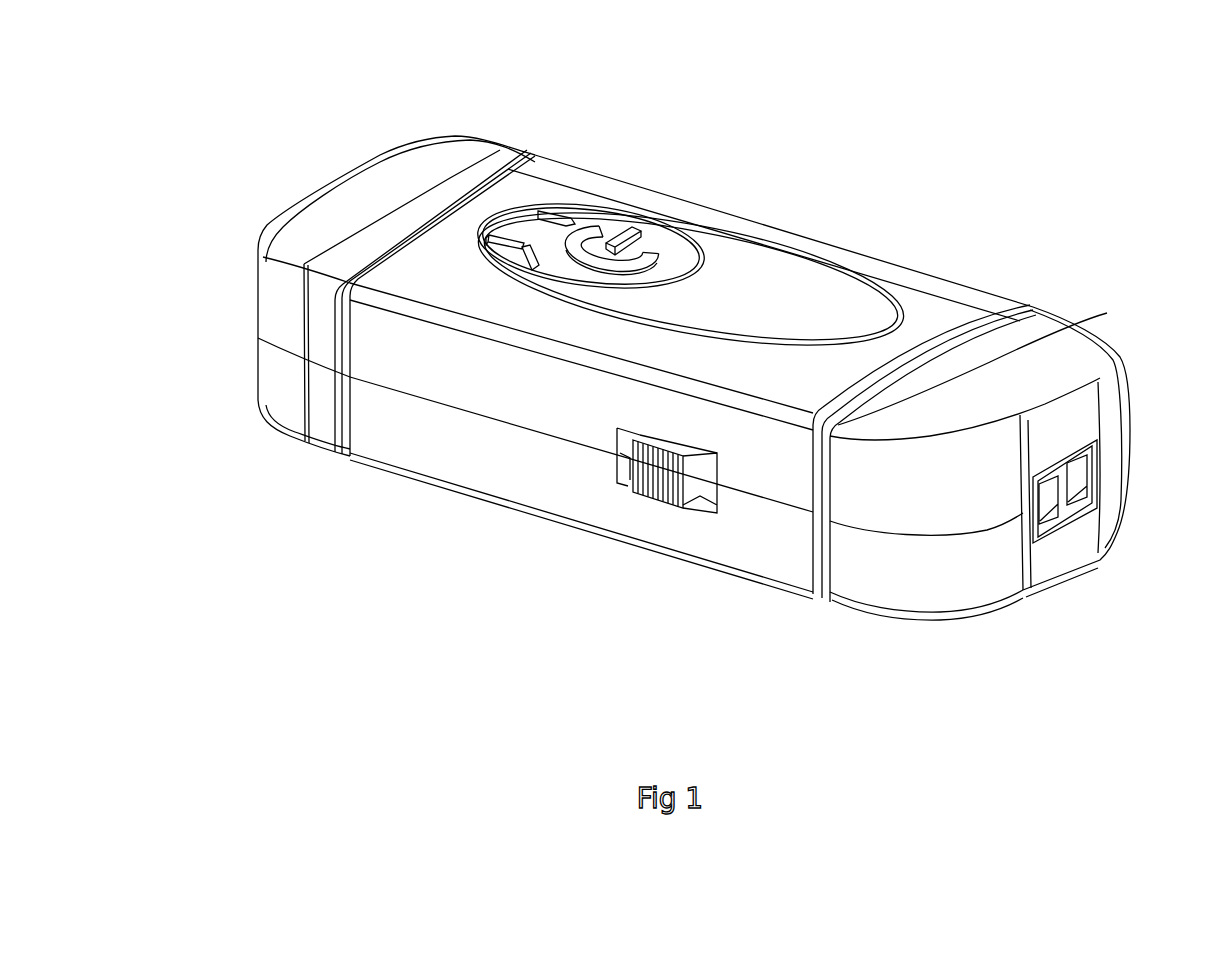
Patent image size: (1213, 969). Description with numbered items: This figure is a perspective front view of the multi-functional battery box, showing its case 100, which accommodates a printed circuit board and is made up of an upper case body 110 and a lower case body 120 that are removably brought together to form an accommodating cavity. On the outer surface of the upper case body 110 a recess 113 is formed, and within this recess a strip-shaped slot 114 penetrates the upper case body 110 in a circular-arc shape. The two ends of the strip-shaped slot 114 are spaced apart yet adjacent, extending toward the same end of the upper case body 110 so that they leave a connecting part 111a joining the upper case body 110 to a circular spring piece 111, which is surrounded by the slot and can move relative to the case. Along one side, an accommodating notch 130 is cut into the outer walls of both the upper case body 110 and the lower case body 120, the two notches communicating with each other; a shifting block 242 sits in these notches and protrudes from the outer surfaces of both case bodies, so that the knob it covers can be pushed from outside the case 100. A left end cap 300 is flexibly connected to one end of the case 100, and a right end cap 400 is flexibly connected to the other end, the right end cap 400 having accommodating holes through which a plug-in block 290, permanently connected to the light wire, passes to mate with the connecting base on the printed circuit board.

The case 100 is at (723, 206).
The upper case body 110 is at (940, 300).
The spring piece 111 is at (652, 231).
The connecting part 111a is at (536, 226).
The recess 113 is at (772, 283).
The strip-shaped slot 114 is at (690, 258).
The lower case body 120 is at (453, 452).
The accommodating notch 130 is at (707, 507).
The shifting block 242 is at (630, 480).
The plug-in block 290 is at (1067, 504).
The left end cap 300 is at (320, 222).
The right end cap 400 is at (933, 587).